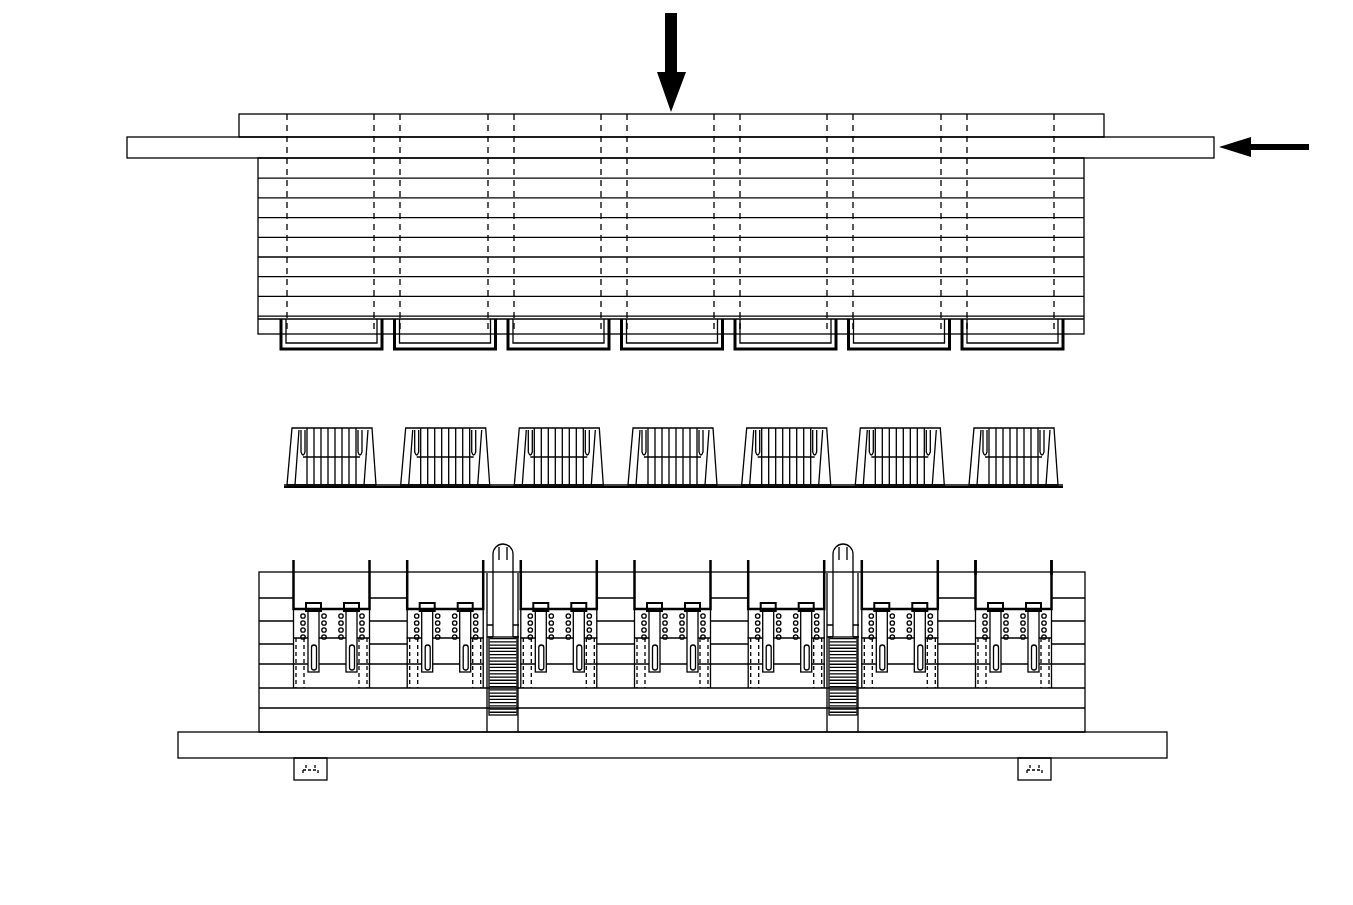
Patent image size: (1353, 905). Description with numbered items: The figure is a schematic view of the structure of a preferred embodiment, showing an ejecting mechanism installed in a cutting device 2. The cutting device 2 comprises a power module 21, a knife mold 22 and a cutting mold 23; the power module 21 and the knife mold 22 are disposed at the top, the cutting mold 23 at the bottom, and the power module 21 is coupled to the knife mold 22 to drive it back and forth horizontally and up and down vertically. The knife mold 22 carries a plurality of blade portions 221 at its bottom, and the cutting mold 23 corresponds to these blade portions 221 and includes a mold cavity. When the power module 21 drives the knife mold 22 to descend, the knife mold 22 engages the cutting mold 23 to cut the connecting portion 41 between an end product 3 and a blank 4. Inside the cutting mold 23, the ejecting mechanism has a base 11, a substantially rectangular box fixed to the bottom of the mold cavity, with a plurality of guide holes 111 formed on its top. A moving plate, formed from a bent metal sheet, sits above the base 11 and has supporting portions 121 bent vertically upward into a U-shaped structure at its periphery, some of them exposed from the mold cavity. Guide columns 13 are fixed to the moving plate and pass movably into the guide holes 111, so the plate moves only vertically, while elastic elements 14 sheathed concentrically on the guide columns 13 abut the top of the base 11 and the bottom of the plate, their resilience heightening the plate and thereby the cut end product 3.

The cutting device 2 is at (597, 18).
The power module 21 is at (662, 57).
The knife mold 22 is at (728, 235).
The blade portions 221 is at (1070, 336).
The cutting mold 23 is at (1072, 680).
The end product 3 is at (1030, 428).
The blank 4 is at (1067, 487).
The connecting portion 41 is at (955, 485).
The supporting portions 121 is at (1052, 561).
The elastic elements 14 is at (1052, 597).
The guide columns 13 is at (1033, 620).
The base 11 is at (1048, 635).
The guide holes 111 is at (1025, 655).